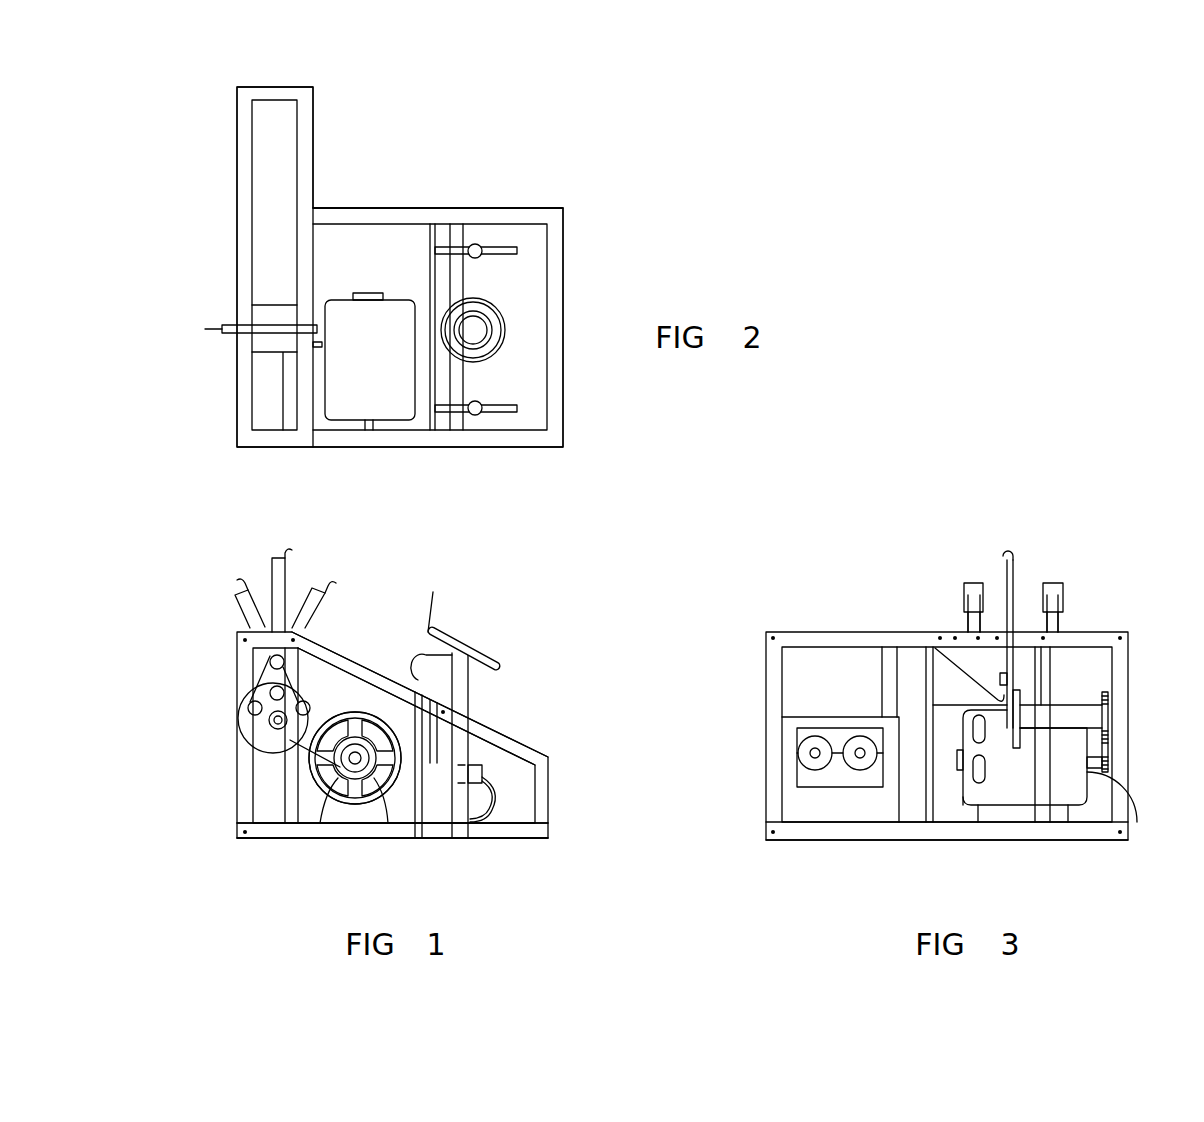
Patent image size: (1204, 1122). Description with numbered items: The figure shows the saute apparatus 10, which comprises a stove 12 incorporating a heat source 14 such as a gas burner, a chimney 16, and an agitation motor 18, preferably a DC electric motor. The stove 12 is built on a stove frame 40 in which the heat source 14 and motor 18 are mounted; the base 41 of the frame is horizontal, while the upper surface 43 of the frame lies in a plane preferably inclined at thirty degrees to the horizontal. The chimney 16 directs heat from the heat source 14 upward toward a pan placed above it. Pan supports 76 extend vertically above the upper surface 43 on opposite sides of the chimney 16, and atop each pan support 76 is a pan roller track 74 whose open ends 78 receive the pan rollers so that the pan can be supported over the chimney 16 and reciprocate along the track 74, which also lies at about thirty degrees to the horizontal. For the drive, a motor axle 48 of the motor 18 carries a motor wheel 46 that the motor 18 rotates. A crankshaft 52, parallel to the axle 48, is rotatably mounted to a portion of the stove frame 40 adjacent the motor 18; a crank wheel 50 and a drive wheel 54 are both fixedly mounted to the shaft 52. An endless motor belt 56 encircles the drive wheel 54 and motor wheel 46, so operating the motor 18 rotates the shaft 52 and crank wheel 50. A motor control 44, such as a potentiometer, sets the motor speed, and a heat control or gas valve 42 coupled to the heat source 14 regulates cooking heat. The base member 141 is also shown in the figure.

In FIG. 2, the apparatus 10 is at (445, 185).
In FIG. 1, the apparatus 10 is at (462, 604).
In FIG. 3, the apparatus 10 is at (858, 601).
In FIG. 1, the stove 12 is at (237, 758).
In FIG. 1, the heat source 14 is at (482, 770).
In FIG. 2, the chimney 16 is at (505, 330).
In FIG. 1, the chimney 16 is at (495, 733).
In FIG. 2, the agitation motor 18 is at (330, 413).
In FIG. 1, the agitation motor 18 is at (373, 718).
In FIG. 3, the agitation motor 18 is at (1012, 801).
In FIG. 2, the stove frame 40 is at (237, 410).
In FIG. 1, the stove frame 40 is at (237, 807).
In FIG. 3, the stove frame 40 is at (1122, 770).
In FIG. 3, the base 41 is at (848, 832).
In FIG. 3, the heat control 42 is at (858, 740).
In FIG. 2, the upper surface 43 is at (381, 208).
In FIG. 1, the upper surface 43 is at (360, 668).
In FIG. 3, the motor control 44 is at (814, 740).
In FIG. 1, the motor wheel 46 is at (356, 770).
In FIG. 3, the motor wheel 46 is at (1108, 760).
In FIG. 3, the motor axle 48 is at (1137, 822).
In FIG. 3, the crank wheel 50 is at (1016, 740).
In FIG. 2, the crankshaft 52 is at (290, 370).
In FIG. 3, the crankshaft 52 is at (1067, 720).
In FIG. 3, the drive wheel 54 is at (1110, 700).
In FIG. 1, the motor belt 56 is at (352, 755).
In FIG. 2, the pan roller track 74 is at (510, 257).
In FIG. 1, the pan roller track 74 is at (477, 652).
In FIG. 3, the pan roller track 74 is at (1063, 607).
In FIG. 1, the pan support 76 is at (431, 672).
In FIG. 3, the pan support 76 is at (1063, 620).
In FIG. 1, the open end 78 is at (432, 597).
In FIG. 3, the open end 78 is at (1052, 583).
In FIG. 1, the base member 141 is at (380, 828).